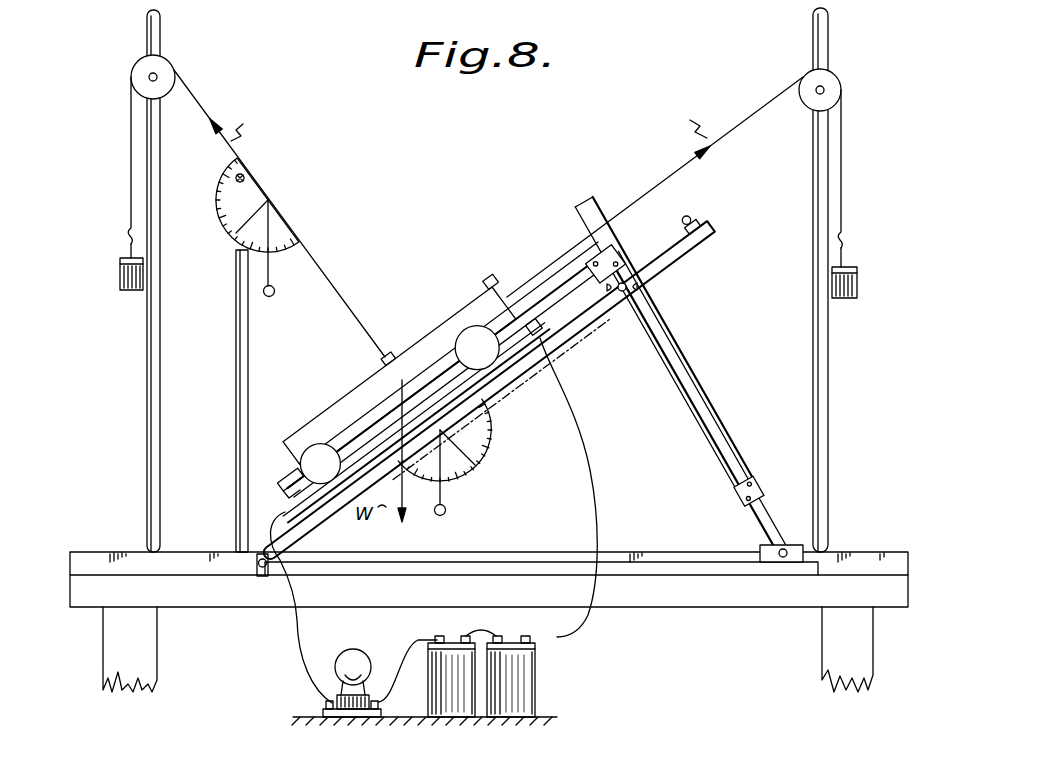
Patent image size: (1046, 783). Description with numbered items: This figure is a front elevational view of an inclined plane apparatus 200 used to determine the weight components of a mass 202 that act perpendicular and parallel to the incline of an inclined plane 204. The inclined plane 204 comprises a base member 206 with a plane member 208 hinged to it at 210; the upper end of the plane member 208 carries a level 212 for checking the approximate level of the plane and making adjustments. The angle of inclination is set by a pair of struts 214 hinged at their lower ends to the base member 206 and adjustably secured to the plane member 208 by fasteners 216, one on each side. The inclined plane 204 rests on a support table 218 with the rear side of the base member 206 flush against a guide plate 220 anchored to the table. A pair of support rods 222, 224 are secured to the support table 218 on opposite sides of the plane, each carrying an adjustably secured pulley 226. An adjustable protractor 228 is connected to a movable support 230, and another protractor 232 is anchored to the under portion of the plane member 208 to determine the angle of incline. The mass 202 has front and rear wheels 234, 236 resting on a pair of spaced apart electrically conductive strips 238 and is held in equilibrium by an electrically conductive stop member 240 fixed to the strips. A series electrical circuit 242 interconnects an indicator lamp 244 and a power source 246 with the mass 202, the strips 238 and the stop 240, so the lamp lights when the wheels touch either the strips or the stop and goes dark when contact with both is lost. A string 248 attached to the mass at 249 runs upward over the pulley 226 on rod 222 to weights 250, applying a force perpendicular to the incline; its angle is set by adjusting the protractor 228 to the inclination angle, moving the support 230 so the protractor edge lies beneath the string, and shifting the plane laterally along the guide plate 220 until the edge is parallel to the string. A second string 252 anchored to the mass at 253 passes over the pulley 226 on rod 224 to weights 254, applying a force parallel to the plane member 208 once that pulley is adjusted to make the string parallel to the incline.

The inclined plane apparatus 200 is at (549, 227).
The mass 202 is at (415, 338).
The inclined plane 204 is at (525, 371).
The base member 206 is at (596, 602).
The plane member 208 is at (543, 347).
The hinge 210 is at (263, 577).
The level 212 is at (700, 222).
The struts 214 is at (701, 391).
The fasteners 216 is at (636, 288).
The support table 218 is at (758, 588).
The guide plate 220 is at (862, 560).
The support rod 222 is at (148, 384).
The support rod 224 is at (828, 428).
The pulley 226 is at (162, 72).
The adjustable protractor 228 is at (254, 193).
The movable support 230 is at (249, 366).
The protractor 232 is at (472, 443).
The front wheels 234 is at (320, 460).
The rear wheels 236 is at (477, 345).
The electrically conductive strips 238 is at (536, 322).
The stop member 240 is at (293, 480).
The series electrical circuit 242 is at (557, 637).
The indicator lamp 244 is at (348, 716).
The power source 246 is at (510, 700).
The string 248 is at (331, 284).
The attachment point 249 is at (387, 352).
The weights 250 is at (120, 275).
The string 252 is at (641, 199).
The anchor point 253 is at (504, 273).
The weights 254 is at (858, 283).